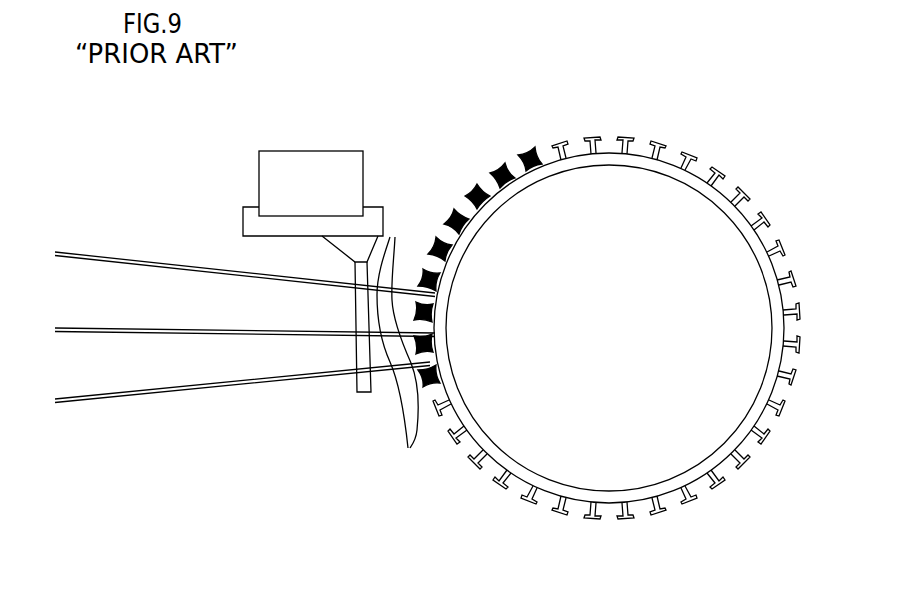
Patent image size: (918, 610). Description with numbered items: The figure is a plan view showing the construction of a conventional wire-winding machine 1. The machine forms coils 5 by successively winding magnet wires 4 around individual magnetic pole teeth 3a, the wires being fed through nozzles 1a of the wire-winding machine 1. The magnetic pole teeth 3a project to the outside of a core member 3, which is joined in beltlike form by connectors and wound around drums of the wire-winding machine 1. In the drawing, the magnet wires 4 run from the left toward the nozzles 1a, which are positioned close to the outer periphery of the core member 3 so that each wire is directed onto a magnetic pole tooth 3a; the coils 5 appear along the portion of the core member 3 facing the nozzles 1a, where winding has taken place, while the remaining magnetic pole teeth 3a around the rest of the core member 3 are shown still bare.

The wire-winding machine 1 is at (370, 216).
The nozzle 1a is at (386, 304).
The core member 3 is at (720, 182).
The magnetic pole tooth 3a is at (713, 176).
The magnet wire 4 is at (192, 267).
The coil 5 is at (397, 356).